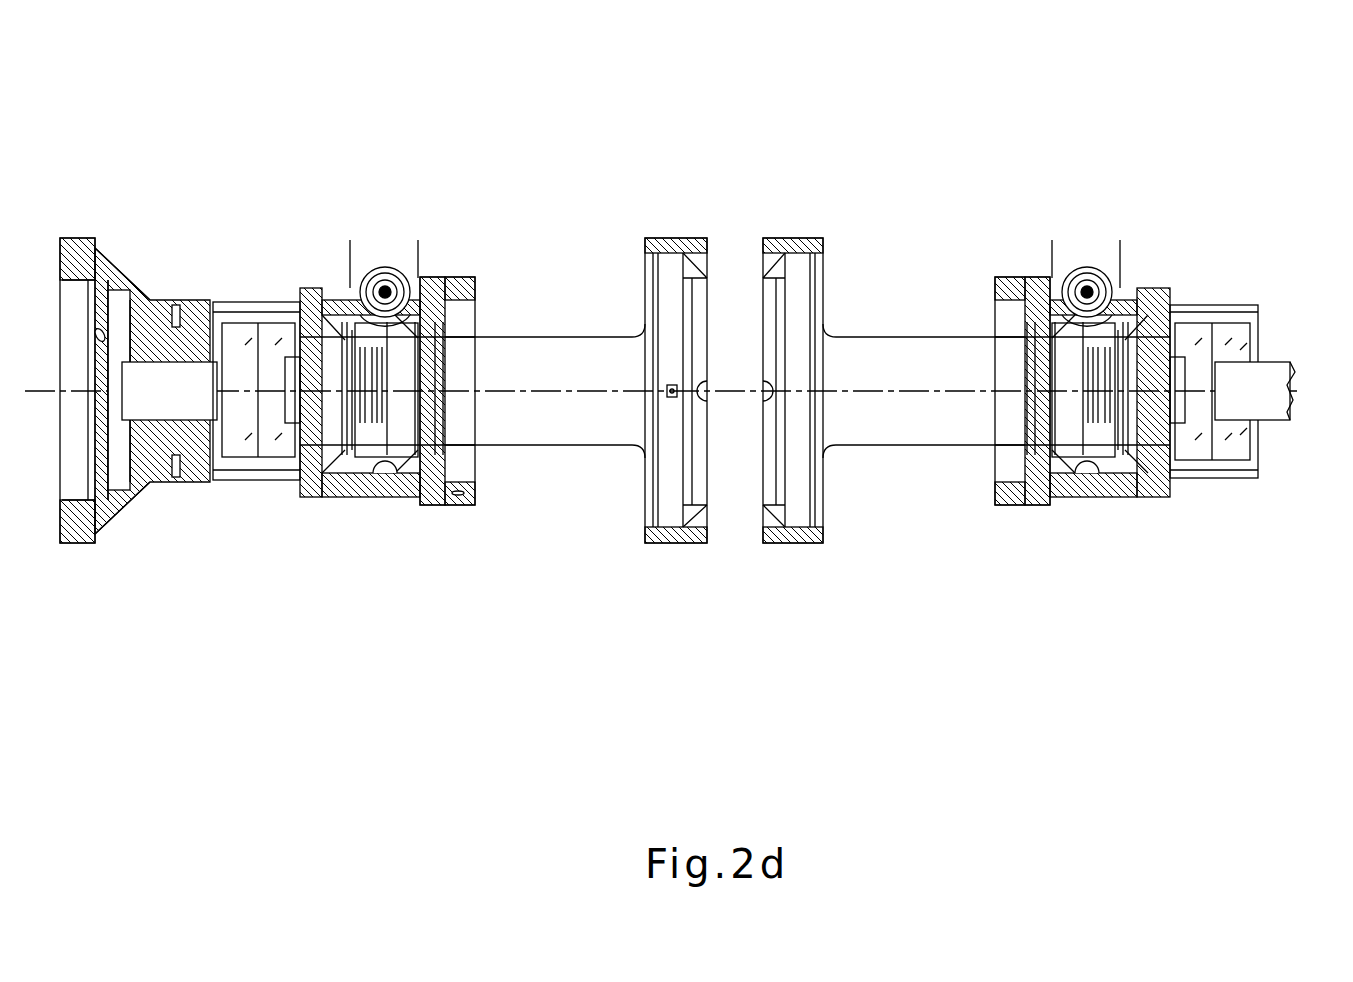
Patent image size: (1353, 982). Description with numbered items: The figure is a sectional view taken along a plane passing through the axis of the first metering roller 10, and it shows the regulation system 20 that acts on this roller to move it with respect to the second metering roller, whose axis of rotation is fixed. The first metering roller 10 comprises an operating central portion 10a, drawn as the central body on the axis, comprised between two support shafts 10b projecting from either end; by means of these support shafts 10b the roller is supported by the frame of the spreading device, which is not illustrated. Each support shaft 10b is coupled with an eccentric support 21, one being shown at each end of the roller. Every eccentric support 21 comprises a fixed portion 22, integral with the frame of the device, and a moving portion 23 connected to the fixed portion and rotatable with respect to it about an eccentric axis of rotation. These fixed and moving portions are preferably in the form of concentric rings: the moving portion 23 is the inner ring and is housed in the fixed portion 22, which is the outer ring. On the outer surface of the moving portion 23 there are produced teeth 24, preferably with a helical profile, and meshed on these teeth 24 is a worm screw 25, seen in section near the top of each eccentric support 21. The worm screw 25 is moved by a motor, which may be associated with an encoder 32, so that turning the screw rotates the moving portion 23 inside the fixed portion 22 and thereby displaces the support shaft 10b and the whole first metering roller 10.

The first metering roller 10 is at (807, 175).
The operating central portion 10a is at (773, 243).
The support shaft 10b is at (547, 362).
The regulation system 20 is at (290, 165).
The eccentric support 21 is at (395, 505).
The fixed portion 22 is at (330, 497).
The moving portion 23 is at (327, 287).
The teeth 24 is at (437, 310).
The worm screw 25 is at (376, 290).
The encoder 32 is at (1225, 440).